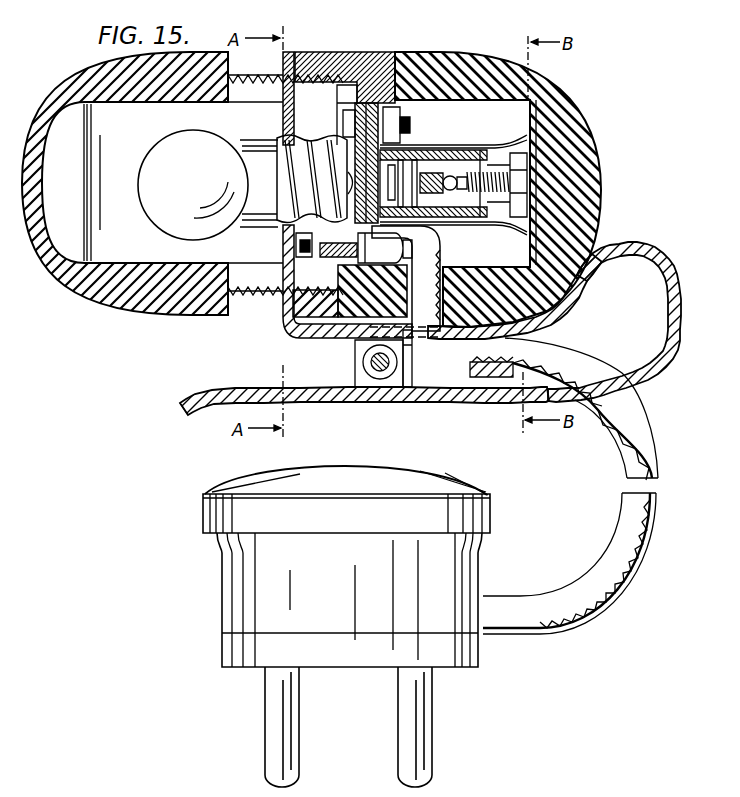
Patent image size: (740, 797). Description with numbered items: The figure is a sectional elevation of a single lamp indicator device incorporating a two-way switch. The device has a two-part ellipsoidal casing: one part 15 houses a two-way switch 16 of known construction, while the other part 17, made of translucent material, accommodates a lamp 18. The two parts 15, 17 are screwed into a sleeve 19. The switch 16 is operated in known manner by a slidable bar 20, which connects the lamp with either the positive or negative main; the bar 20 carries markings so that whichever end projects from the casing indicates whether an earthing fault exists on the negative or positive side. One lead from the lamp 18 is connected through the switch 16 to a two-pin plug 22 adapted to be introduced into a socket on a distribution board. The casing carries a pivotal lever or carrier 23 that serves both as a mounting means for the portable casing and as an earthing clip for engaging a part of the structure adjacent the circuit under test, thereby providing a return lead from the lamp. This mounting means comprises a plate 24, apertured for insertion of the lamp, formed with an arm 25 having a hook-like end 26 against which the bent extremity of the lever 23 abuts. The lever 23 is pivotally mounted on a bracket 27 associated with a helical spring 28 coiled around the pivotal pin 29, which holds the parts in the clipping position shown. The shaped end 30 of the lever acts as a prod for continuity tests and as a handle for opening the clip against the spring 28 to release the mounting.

The casing part 15 is at (420, 67).
The two-way switch 16 is at (470, 145).
The casing part 17 is at (173, 297).
The lamp 18 is at (167, 217).
The sleeve 19 is at (362, 53).
The slidable bar 20 is at (445, 217).
The two-pin plug 22 is at (227, 570).
The pivotal lever 23 is at (313, 397).
The plate 24 is at (285, 280).
The arm 25 is at (523, 330).
The hook-like end 26 is at (672, 276).
The bracket 27 is at (409, 385).
The helical spring 28 is at (370, 383).
The pivotal pin 29 is at (364, 360).
The shaped end 30 is at (194, 422).